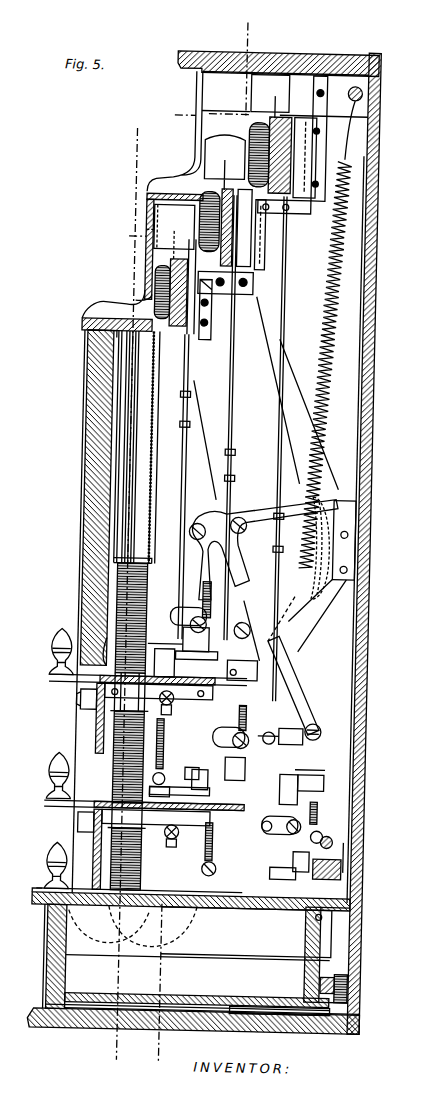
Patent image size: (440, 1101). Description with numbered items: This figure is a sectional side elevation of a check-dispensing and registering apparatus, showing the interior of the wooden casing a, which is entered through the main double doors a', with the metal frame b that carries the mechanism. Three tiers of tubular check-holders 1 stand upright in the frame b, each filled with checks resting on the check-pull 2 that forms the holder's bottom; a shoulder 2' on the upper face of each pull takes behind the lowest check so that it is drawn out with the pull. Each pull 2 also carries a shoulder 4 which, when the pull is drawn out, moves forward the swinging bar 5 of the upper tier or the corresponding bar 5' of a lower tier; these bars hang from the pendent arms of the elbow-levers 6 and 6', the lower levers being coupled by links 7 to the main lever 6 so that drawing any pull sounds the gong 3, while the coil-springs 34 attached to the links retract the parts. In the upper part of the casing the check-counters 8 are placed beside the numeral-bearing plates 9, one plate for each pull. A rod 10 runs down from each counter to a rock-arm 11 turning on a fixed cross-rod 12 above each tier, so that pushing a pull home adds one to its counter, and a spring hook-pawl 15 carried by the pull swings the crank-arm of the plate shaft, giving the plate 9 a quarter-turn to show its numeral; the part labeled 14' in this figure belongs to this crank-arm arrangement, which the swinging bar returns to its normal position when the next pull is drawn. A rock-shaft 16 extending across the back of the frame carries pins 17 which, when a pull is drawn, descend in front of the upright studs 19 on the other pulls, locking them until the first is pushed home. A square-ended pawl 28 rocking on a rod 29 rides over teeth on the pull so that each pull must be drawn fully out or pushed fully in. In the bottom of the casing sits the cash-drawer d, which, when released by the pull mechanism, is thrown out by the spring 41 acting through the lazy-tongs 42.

The tubular check-holder 1 is at (112, 490).
The check-pull 2 is at (138, 542).
The shoulder 2' is at (157, 758).
The gong 3 is at (250, 553).
The shoulder 4 is at (274, 731).
The swinging bar 5 is at (197, 643).
The swinging bar 5' is at (250, 819).
The elbow-lever 6 is at (260, 549).
The elbow-lever 6' is at (274, 726).
The link 7 is at (306, 688).
The check-counter 8 is at (246, 126).
The numeral-bearing plate 9 is at (257, 168).
The rod 10 is at (229, 409).
The rock-arm 11 is at (172, 620).
The fixed cross-rod 12 is at (193, 630).
The bar 14' is at (195, 790).
The spring hook-pawl 15 is at (210, 660).
The rock-shaft 16 is at (339, 845).
The front pin 17 is at (299, 821).
The upright stud 19 is at (280, 634).
The pawl 28 is at (178, 704).
The rod 29 is at (184, 795).
The coil-spring 34 is at (331, 327).
The spring 41 is at (357, 993).
The lazy-tongs 42 is at (288, 1013).
The casing a is at (117, 304).
The main double doors a' is at (80, 497).
The metal frame b is at (196, 414).
The cash-drawer d is at (246, 936).